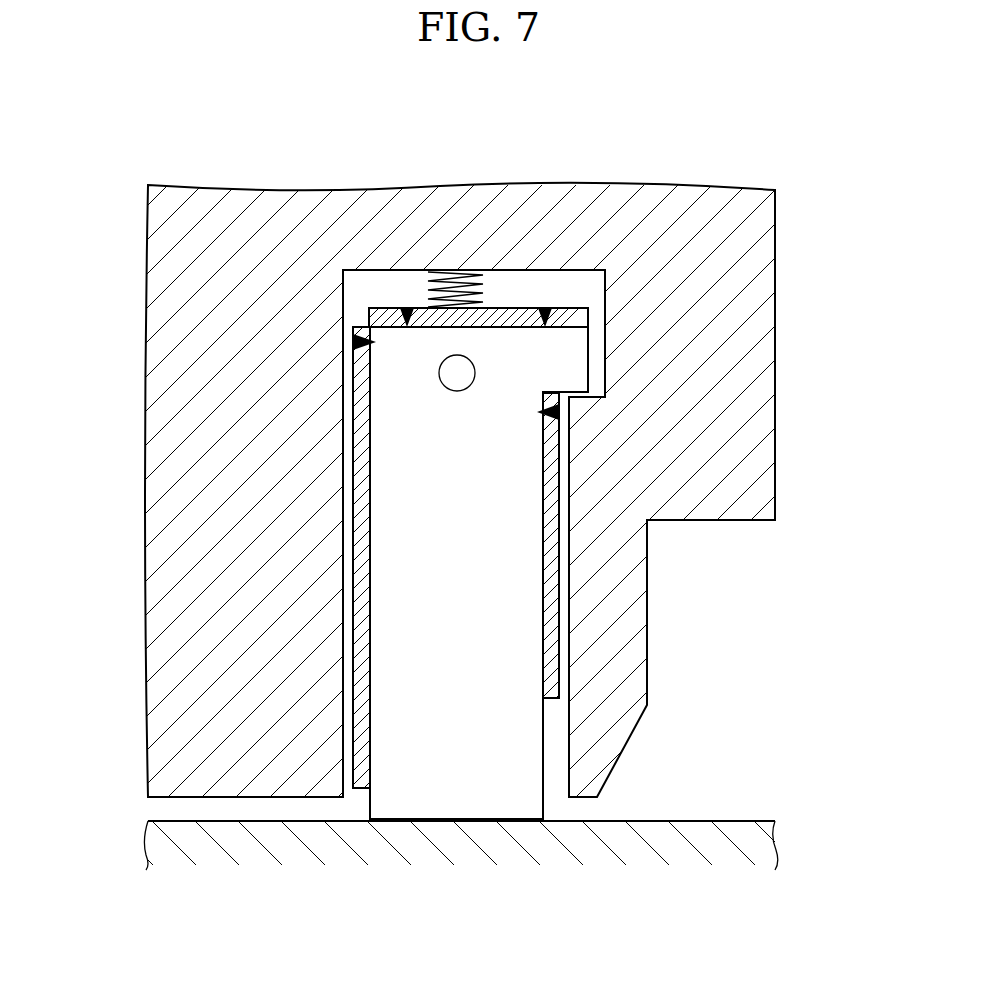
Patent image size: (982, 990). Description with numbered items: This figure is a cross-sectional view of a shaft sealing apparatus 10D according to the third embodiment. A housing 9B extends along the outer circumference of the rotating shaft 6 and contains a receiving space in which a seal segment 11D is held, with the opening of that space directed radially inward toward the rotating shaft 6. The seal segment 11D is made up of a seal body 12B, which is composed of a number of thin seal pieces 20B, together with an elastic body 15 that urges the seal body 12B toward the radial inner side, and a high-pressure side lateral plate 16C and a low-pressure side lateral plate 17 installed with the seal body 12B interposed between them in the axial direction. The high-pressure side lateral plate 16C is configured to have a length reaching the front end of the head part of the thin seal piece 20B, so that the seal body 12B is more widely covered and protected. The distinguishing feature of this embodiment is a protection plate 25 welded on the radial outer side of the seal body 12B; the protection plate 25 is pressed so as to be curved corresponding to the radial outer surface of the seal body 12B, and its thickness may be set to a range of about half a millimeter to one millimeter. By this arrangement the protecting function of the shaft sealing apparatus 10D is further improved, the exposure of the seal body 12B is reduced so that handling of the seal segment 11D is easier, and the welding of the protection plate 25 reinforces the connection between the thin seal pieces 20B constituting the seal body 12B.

The shaft sealing apparatus 10D is at (491, 477).
The housing 9B is at (757, 278).
The seal segment 11D is at (496, 298).
The seal body 12B is at (590, 344).
The elastic body 15 is at (450, 283).
The protection plate 25 is at (522, 313).
The high-pressure side lateral plate 16C is at (350, 560).
The low-pressure side lateral plate 17 is at (552, 607).
The thin seal piece 20B is at (532, 762).
The rotating shaft 6 is at (743, 827).